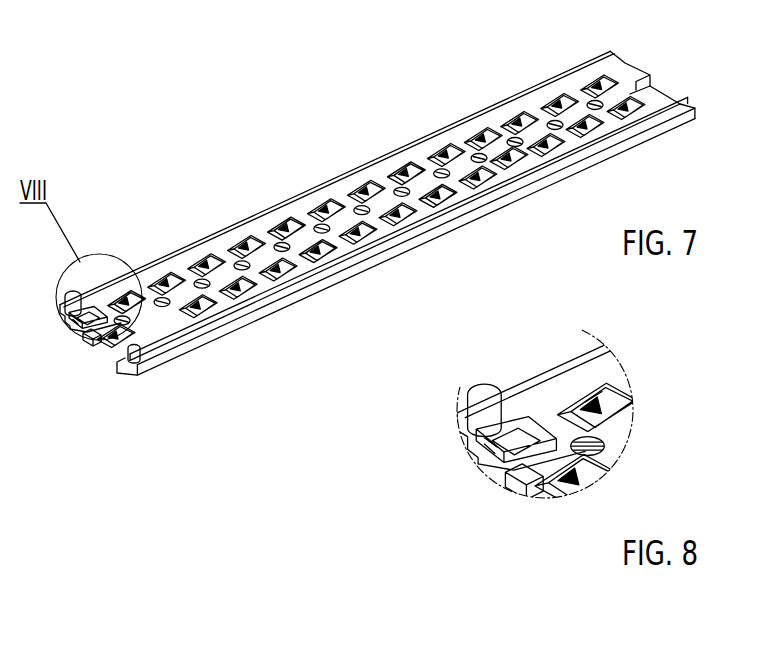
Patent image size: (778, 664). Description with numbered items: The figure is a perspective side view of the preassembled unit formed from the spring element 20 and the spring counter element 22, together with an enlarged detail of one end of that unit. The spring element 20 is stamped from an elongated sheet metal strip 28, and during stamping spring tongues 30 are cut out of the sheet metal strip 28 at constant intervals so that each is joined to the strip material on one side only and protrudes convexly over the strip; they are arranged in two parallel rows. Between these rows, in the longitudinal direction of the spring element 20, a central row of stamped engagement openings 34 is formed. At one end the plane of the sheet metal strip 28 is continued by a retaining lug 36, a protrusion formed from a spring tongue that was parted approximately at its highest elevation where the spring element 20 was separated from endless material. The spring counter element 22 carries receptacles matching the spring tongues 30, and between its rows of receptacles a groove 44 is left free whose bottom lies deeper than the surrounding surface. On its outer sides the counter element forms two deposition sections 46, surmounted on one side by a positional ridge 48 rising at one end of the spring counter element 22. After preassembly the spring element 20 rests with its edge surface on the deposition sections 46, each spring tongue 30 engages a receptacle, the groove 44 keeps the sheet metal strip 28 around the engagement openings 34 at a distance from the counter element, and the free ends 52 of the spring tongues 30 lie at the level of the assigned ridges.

In FIG. 7, the spring element 20 is at (333, 187).
In FIG. 7, the spring counter element 22 is at (614, 58).
In FIG. 8, the sheet metal strip 28 is at (570, 369).
In FIG. 8, the spring tongues 30 is at (596, 407).
In FIG. 7, the engagement openings 34 is at (239, 264).
In FIG. 8, the engagement openings 34 is at (588, 446).
In FIG. 7, the retaining lug 36 is at (68, 326).
In FIG. 8, the retaining lug 36 is at (516, 440).
In FIG. 7, the groove 44 is at (90, 346).
In FIG. 8, the groove 44 is at (524, 482).
In FIG. 8, the deposition sections 46 is at (562, 364).
In FIG. 7, the positional ridge 48 is at (142, 362).
In FIG. 8, the positional ridge 48 is at (518, 387).
In FIG. 8, the free ends 52 is at (591, 402).